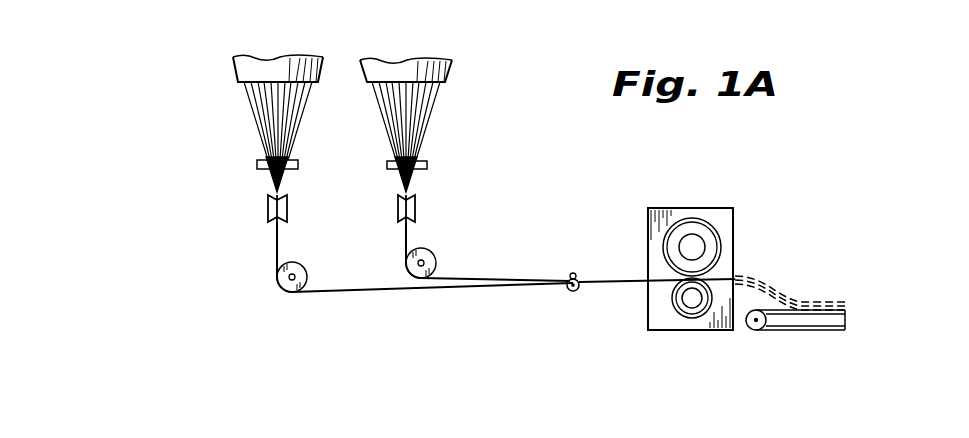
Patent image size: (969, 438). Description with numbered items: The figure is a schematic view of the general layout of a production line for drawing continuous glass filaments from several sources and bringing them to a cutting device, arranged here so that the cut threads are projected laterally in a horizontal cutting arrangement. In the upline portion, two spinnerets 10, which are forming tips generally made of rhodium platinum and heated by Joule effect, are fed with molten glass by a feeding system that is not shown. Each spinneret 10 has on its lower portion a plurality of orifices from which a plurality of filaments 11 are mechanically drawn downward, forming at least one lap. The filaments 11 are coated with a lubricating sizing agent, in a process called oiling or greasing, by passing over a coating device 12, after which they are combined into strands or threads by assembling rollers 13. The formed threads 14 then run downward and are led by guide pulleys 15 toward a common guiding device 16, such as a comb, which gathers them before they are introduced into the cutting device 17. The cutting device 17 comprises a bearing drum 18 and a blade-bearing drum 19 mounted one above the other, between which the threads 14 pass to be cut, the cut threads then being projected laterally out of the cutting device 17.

The spinneret 10 is at (289, 66).
The filaments 11 is at (242, 128).
The coating device 12 is at (298, 161).
The assembling rollers 13 is at (289, 208).
The threads 14 is at (279, 240).
The guide pulleys 15 is at (291, 292).
The guiding device 16 is at (569, 291).
The cutting device 17 is at (760, 229).
The bearing drum 18 is at (694, 230).
The blade-bearing drum 19 is at (692, 311).